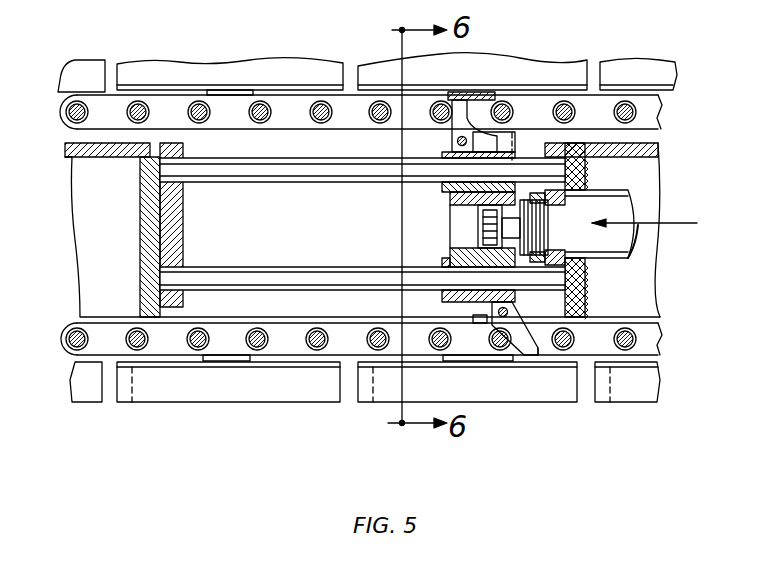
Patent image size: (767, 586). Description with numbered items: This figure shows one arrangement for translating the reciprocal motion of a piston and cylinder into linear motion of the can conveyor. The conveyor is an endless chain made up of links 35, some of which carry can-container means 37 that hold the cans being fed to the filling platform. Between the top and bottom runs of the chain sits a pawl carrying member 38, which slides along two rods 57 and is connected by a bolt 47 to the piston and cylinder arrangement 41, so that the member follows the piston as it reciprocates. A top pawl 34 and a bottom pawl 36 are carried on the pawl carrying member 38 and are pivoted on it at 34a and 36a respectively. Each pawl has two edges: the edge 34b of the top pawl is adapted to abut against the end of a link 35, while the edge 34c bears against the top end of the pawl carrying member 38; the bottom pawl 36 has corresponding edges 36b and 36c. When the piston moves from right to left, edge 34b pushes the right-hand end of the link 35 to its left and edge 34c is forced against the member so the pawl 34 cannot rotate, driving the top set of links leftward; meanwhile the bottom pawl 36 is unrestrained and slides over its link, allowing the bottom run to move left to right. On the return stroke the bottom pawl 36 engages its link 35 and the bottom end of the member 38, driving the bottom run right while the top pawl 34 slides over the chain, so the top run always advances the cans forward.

The pawl 34 is at (470, 117).
The pivot 34a is at (456, 143).
The pawl edge 34b is at (458, 100).
The pawl edge 34c is at (443, 182).
The link 35 is at (291, 104).
The pawl 36 is at (518, 347).
The pivot 36a is at (517, 308).
The pawl edge 36b is at (533, 352).
The pawl edge 36c is at (476, 318).
The can-container means 37 is at (237, 62).
The pawl carrying member 38 is at (465, 254).
The piston and cylinder arrangement 41 is at (623, 198).
The bolt 47 is at (478, 214).
The rods 57 is at (253, 181).